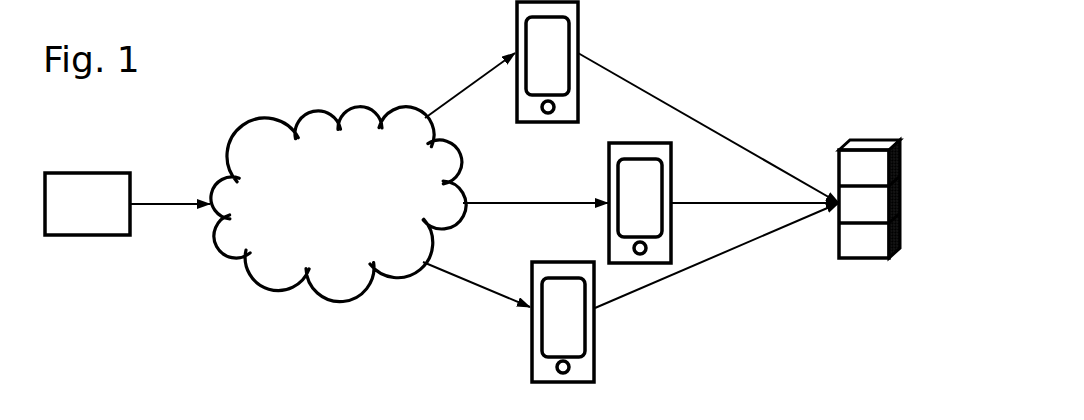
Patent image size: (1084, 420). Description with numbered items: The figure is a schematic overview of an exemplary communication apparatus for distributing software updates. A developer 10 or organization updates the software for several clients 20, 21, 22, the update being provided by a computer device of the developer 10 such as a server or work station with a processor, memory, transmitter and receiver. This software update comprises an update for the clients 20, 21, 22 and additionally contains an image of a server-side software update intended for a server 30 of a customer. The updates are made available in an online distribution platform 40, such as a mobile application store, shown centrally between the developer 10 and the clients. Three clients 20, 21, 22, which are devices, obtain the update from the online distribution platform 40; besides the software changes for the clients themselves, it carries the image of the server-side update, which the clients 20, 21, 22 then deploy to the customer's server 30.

The developer 10 is at (127, 204).
The client 20 is at (547, 62).
The client 21 is at (640, 203).
The client 22 is at (563, 322).
The server 30 is at (874, 158).
The online distribution platform 40 is at (338, 204).